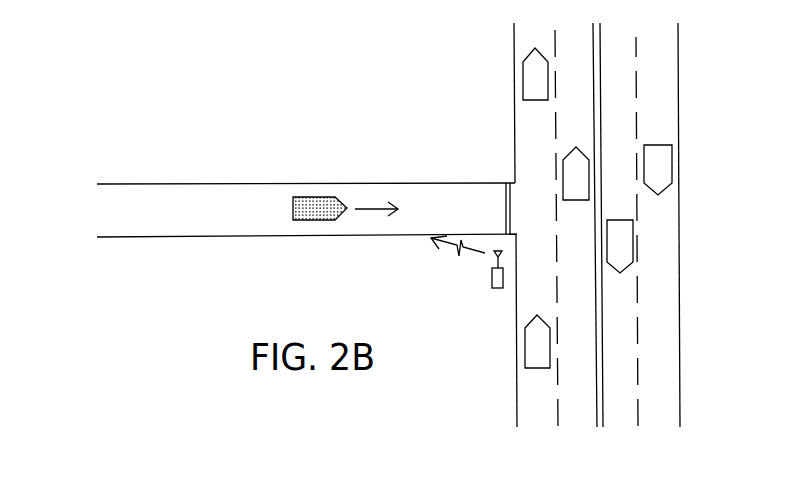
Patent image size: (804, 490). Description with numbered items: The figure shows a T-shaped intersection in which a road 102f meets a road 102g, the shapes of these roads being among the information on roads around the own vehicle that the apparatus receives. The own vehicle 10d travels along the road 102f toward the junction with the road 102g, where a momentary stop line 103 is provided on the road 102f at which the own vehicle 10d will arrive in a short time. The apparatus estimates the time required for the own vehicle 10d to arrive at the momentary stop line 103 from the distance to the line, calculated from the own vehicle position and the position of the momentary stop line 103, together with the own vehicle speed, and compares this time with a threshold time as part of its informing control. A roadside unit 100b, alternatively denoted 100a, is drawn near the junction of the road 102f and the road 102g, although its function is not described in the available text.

The road 102f is at (86, 185).
The road 102g is at (680, 436).
The own vehicle 10d is at (313, 203).
The momentary stop line 103 is at (504, 202).
The roadside communication device 100b is at (495, 288).
The roadside communication device 100a is at (472, 294).